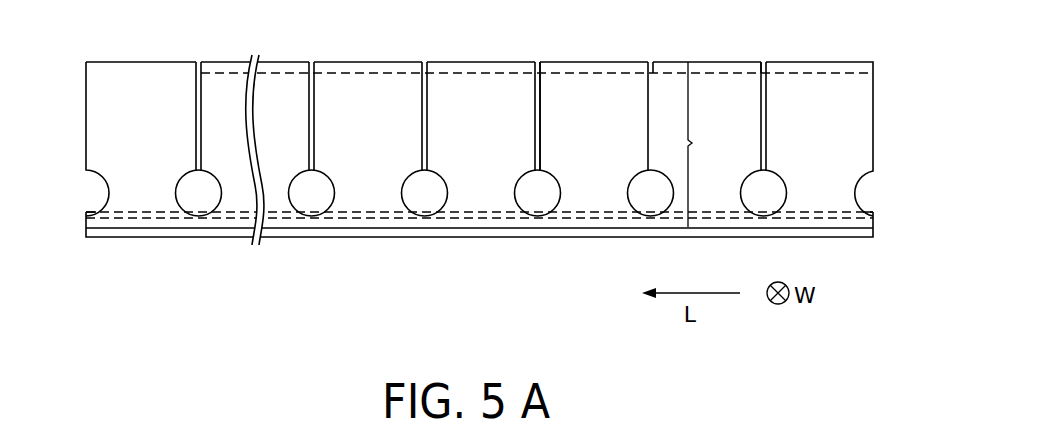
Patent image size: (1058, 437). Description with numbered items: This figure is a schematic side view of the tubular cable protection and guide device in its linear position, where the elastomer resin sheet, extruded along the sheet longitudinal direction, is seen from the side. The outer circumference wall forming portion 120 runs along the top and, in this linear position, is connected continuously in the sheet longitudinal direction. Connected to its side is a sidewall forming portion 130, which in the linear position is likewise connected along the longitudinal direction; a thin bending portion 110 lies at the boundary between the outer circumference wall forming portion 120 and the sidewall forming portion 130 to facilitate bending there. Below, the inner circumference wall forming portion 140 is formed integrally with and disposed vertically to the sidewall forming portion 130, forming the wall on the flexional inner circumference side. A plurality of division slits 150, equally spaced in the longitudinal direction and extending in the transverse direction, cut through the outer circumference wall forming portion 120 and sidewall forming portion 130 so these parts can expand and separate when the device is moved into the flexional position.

The bending portion 110 is at (597, 62).
The outer circumference wall forming portion 120 is at (736, 62).
The sidewall forming portion 130 is at (711, 144).
The inner circumference wall forming portion 140 is at (550, 229).
The division slit 150 is at (428, 88).